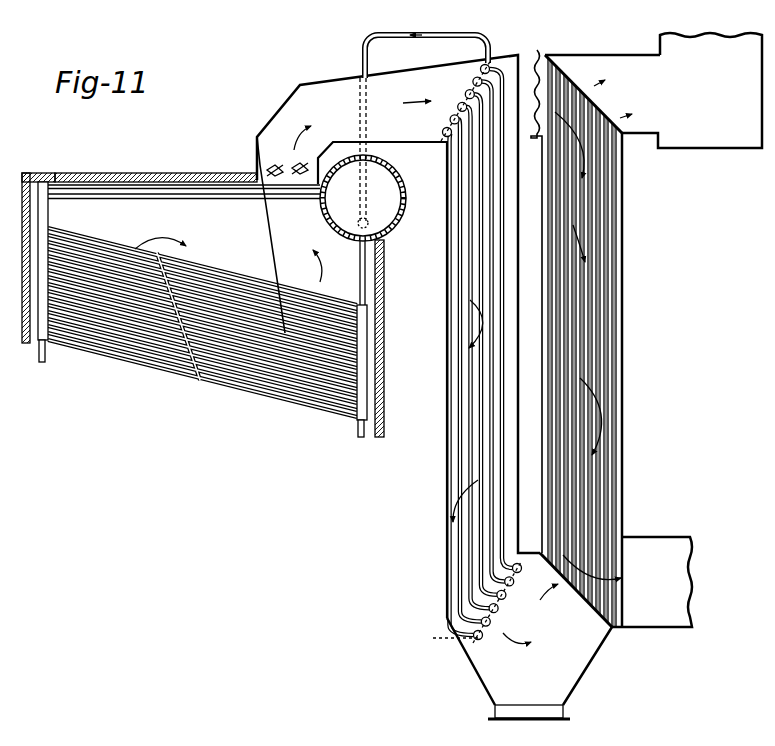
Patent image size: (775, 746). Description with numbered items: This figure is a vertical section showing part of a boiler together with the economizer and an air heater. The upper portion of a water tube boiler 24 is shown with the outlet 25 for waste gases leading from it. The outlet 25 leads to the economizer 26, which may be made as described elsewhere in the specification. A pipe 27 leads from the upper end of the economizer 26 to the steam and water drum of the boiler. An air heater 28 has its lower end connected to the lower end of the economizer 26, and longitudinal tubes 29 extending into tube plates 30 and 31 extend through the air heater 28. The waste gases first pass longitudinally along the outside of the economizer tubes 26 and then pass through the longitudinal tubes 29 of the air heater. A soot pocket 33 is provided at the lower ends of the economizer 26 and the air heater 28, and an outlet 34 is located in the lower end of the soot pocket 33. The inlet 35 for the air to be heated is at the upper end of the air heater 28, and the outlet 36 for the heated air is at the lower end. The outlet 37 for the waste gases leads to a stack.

The water tube boiler 24 is at (203, 305).
The outlet for waste gases 25 is at (398, 336).
The economizer 26 is at (474, 310).
The pipe 27 is at (451, 37).
The air heater 28 is at (621, 305).
The longitudinal tubes 29 is at (610, 358).
The tube plate 30 is at (576, 590).
The tube plate 31 is at (591, 102).
The soot pocket 33 is at (529, 661).
The outlet 34 is at (540, 721).
The inlet for air to be heated 35 is at (537, 290).
The outlet for the heated air 36 is at (645, 628).
The outlet for the waste gases 37 is at (652, 70).